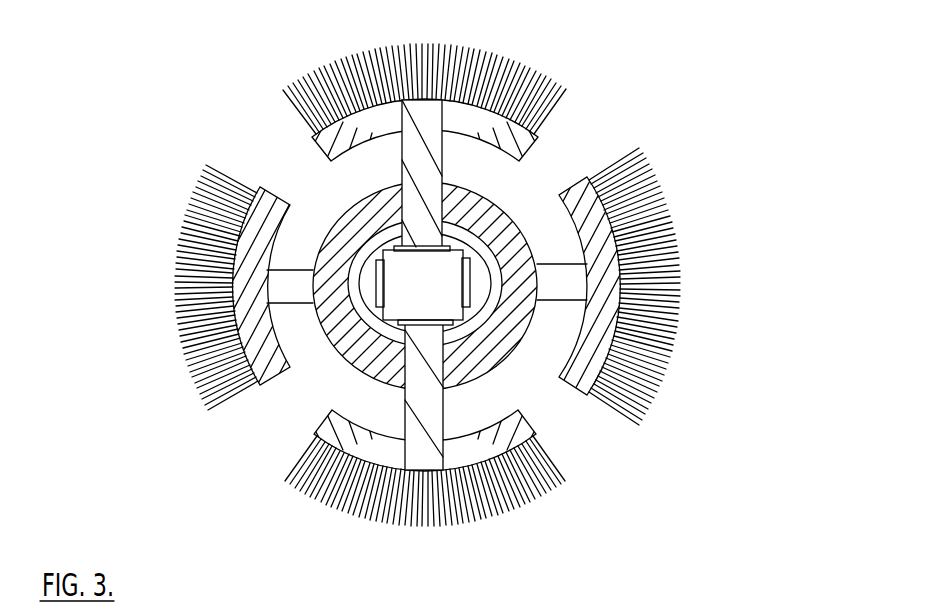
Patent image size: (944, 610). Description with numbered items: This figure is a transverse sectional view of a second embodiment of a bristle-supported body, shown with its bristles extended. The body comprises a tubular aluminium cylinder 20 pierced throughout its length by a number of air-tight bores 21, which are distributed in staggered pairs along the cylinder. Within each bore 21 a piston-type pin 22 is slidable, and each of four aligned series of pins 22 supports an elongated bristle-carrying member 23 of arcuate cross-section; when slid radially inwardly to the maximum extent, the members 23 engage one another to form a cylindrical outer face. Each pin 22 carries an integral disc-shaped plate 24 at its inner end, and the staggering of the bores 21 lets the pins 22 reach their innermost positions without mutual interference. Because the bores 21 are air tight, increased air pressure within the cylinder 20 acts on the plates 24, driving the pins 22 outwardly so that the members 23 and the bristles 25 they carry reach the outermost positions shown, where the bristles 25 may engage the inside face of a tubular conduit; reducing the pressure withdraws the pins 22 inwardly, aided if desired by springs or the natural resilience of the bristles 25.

The tubular aluminium cylinder 20 is at (497, 212).
The air-tight bore 21 is at (447, 380).
The piston-type pin 22 is at (620, 256).
The bristle-carrying member 23 is at (483, 118).
The disc-shaped plate 24 is at (398, 245).
The bristles 25 is at (357, 57).